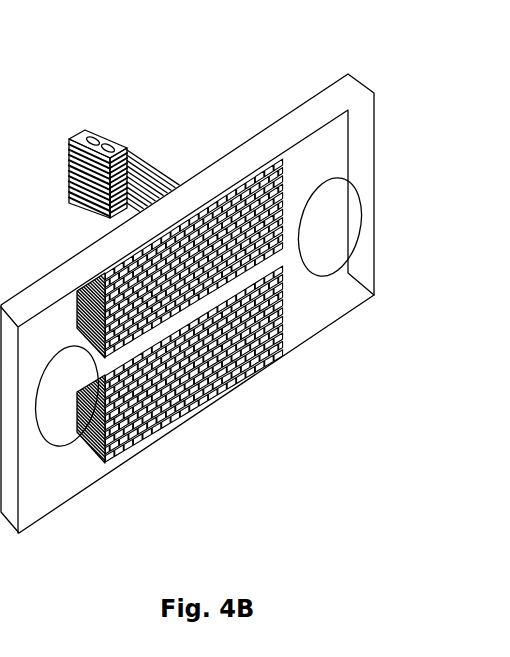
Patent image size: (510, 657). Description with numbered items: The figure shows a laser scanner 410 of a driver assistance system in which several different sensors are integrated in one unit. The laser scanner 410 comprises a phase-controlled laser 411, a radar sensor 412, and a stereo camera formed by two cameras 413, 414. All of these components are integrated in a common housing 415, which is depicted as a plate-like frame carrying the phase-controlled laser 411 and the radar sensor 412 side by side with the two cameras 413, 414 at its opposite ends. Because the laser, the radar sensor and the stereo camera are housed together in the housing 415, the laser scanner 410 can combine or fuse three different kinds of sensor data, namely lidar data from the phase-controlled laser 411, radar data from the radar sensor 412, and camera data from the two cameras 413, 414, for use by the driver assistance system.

The laser scanner 410 is at (205, 93).
The phase-controlled laser 411 is at (213, 367).
The radar sensor 412 is at (222, 187).
The camera 413 is at (56, 425).
The camera 414 is at (320, 258).
The housing 415 is at (324, 104).